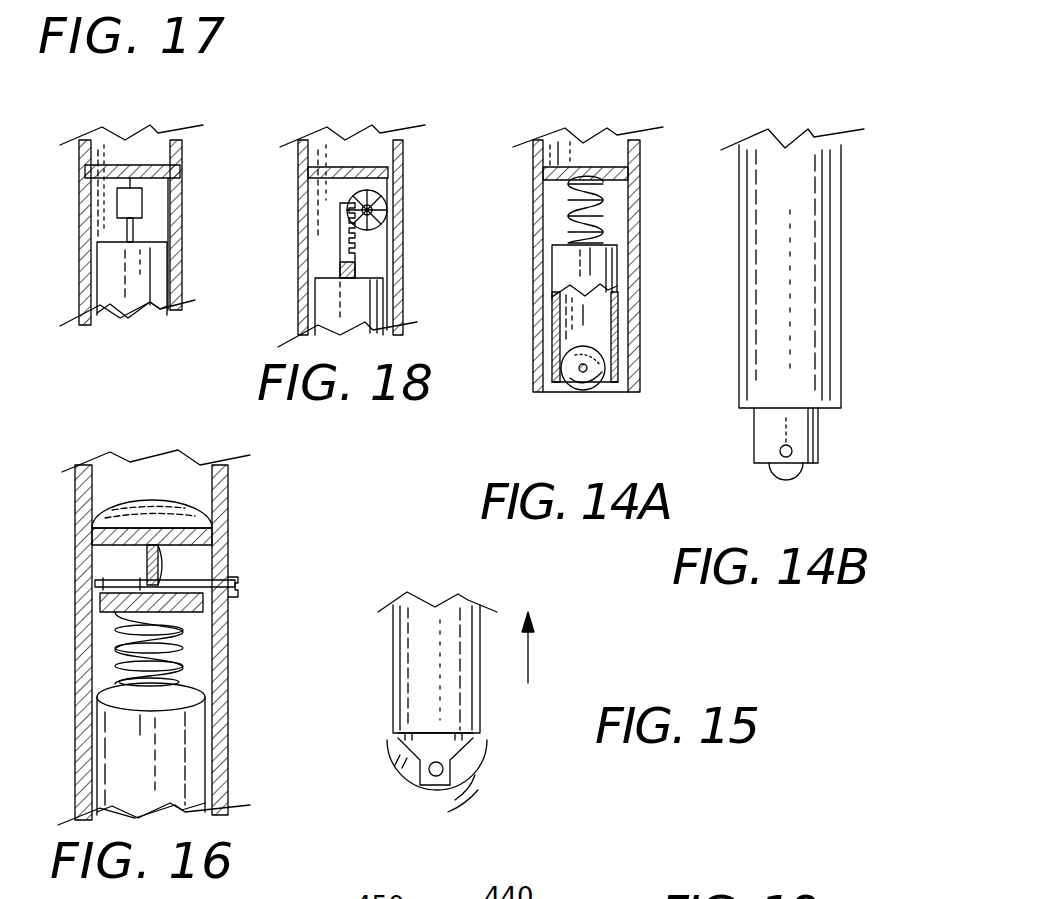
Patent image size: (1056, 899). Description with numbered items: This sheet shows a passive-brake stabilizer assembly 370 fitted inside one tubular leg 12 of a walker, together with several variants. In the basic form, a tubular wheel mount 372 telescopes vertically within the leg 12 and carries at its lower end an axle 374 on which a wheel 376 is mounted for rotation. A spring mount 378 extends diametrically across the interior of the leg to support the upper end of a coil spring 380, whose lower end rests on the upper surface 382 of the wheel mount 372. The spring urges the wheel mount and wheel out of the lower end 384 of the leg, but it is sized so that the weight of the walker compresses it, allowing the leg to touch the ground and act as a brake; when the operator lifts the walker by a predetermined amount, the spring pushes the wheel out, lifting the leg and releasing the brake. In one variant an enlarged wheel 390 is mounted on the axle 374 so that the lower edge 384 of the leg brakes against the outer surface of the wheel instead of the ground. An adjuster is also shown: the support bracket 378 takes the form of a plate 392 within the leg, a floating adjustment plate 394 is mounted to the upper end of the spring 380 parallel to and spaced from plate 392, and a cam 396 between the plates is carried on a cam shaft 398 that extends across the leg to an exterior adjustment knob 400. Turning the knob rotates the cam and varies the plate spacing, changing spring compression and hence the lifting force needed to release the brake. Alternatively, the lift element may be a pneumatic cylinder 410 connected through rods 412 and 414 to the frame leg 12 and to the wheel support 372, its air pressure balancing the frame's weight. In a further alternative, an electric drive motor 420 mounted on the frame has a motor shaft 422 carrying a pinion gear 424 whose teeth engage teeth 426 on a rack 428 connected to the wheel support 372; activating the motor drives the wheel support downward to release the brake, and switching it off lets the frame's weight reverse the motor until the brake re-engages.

In FIG. 17, the tubular leg 12 is at (180, 135).
In FIG. 18, the tubular leg 12 is at (400, 130).
In FIG. 14A, the tubular leg 12 is at (650, 128).
In FIG. 14B, the tubular leg 12 is at (804, 283).
In FIG. 16, the tubular leg 12 is at (230, 505).
In FIG. 15, the tubular leg 12 is at (458, 610).
In FIG. 14A, the stabilizer assembly 370 is at (618, 123).
In FIG. 17, the wheel mount 372 is at (130, 298).
In FIG. 18, the wheel mount 372 is at (367, 304).
In FIG. 14A, the wheel mount 372 is at (605, 275).
In FIG. 14B, the wheel mount 372 is at (818, 438).
In FIG. 16, the wheel mount 372 is at (170, 772).
In FIG. 15, the wheel mount 372 is at (398, 745).
In FIG. 14A, the axle 374 is at (586, 372).
In FIG. 15, the axle 374 is at (428, 774).
In FIG. 14A, the wheel 376 is at (576, 395).
In FIG. 14B, the wheel 376 is at (781, 470).
In FIG. 14A, the spring mount 378 is at (582, 143).
In FIG. 14A, the spring 380 is at (568, 198).
In FIG. 16, the spring 380 is at (185, 660).
In FIG. 14A, the upper surface 382 is at (612, 250).
In FIG. 14A, the lower end 384 is at (552, 395).
In FIG. 15, the lower end 384 is at (480, 738).
In FIG. 15, the enlarged wheel 390 is at (487, 790).
In FIG. 16, the plate 392 is at (190, 522).
In FIG. 16, the floating adjustment plate 394 is at (118, 578).
In FIG. 16, the cam 396 is at (148, 575).
In FIG. 16, the cam shaft 398 is at (190, 612).
In FIG. 16, the adjustment knob 400 is at (238, 590).
In FIG. 17, the pneumatic cylinder 410 is at (142, 205).
In FIG. 17, the rod 412 is at (110, 168).
In FIG. 17, the rod 414 is at (125, 228).
In FIG. 18, the electric drive motor 420 is at (398, 190).
In FIG. 18, the motor shaft 422 is at (390, 238).
In FIG. 18, the pinion gear 424 is at (380, 262).
In FIG. 18, the teeth 426 is at (340, 266).
In FIG. 18, the rack 428 is at (340, 225).